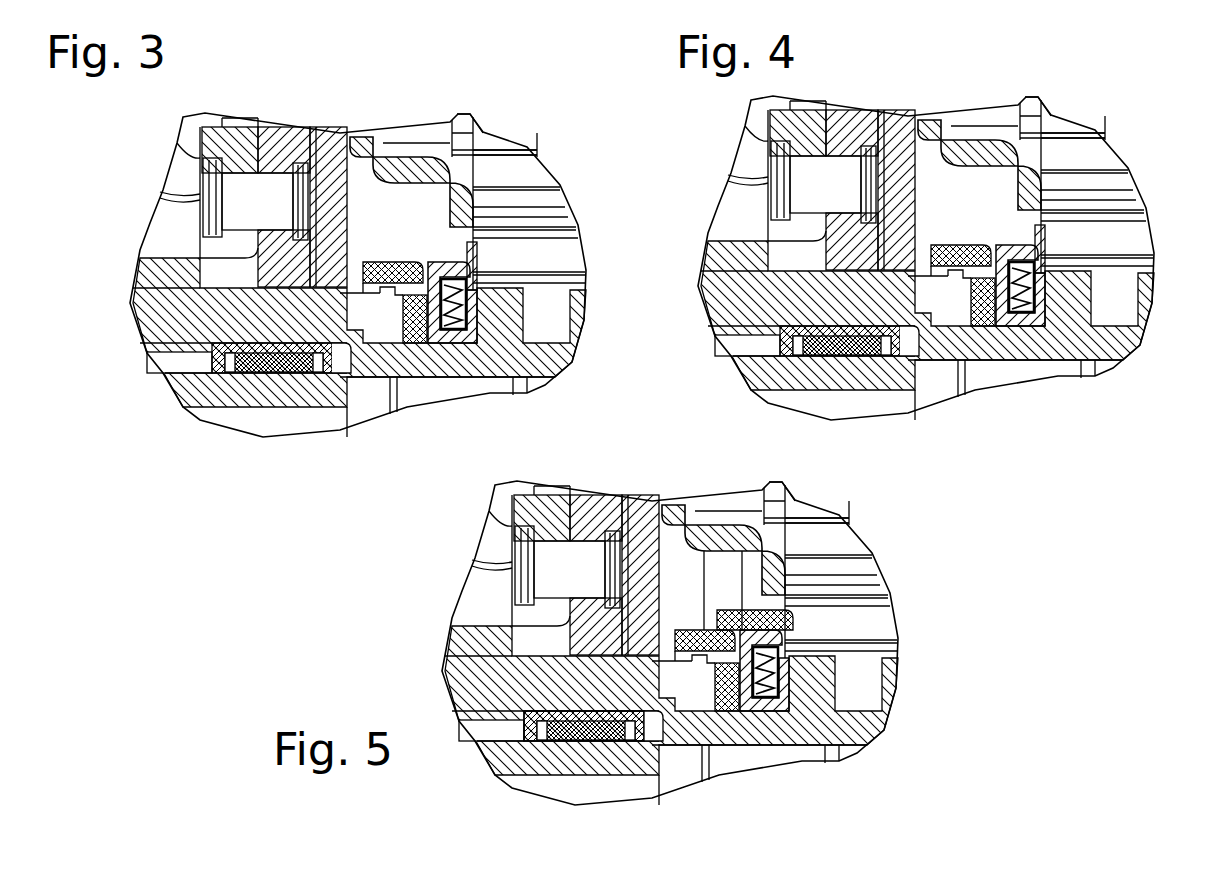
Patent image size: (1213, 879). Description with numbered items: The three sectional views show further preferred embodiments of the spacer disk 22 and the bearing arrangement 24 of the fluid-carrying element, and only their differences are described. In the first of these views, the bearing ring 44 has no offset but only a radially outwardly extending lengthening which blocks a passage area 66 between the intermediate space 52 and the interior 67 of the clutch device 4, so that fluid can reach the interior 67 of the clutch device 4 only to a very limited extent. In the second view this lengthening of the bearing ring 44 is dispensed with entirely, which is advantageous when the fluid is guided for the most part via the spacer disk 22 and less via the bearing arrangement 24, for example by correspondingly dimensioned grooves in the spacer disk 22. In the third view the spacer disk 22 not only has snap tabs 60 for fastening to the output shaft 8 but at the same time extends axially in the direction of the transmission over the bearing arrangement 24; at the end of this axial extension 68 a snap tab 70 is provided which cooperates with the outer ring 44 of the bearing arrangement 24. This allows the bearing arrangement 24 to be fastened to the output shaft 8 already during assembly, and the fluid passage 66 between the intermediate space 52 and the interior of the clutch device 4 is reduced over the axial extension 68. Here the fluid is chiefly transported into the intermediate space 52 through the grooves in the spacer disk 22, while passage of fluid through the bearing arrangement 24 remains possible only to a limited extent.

In FIG. 3, the clutch device 4 is at (522, 203).
In FIG. 5, the clutch device 4 is at (838, 552).
In FIG. 5, the output shaft 8 is at (452, 655).
In FIG. 3, the spacer disk 22 is at (417, 345).
In FIG. 4, the spacer disk 22 is at (989, 325).
In FIG. 5, the spacer disk 22 is at (728, 700).
In FIG. 3, the bearing arrangement 24 is at (466, 347).
In FIG. 4, the bearing arrangement 24 is at (1046, 322).
In FIG. 5, the bearing arrangement 24 is at (792, 705).
In FIG. 3, the bearing ring 44 is at (458, 290).
In FIG. 5, the bearing ring 44 is at (788, 675).
In FIG. 3, the intermediate space 52 is at (372, 215).
In FIG. 5, the intermediate space 52 is at (717, 573).
In FIG. 5, the snap tabs 60 is at (682, 540).
In FIG. 3, the passage area 66 is at (455, 240).
In FIG. 3, the interior of the clutch device 67 is at (510, 175).
In FIG. 4, the interior of the clutch device 67 is at (1118, 183).
In FIG. 5, the interior of the clutch device 67 is at (855, 573).
In FIG. 5, the axial extension 68 is at (752, 618).
In FIG. 5, the snap tab 70 is at (795, 618).